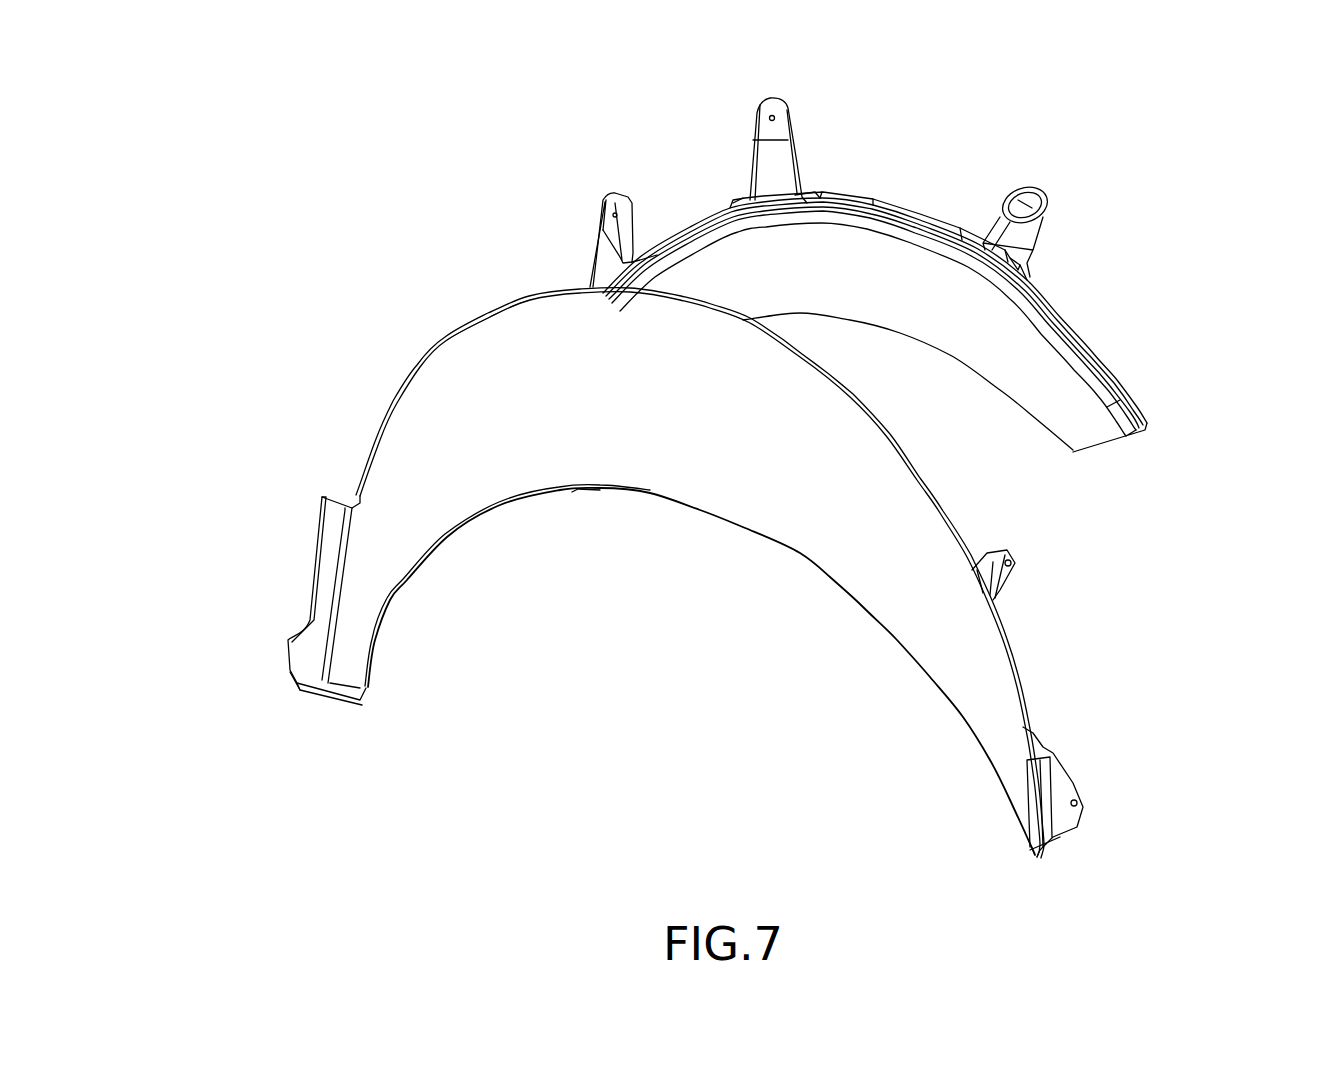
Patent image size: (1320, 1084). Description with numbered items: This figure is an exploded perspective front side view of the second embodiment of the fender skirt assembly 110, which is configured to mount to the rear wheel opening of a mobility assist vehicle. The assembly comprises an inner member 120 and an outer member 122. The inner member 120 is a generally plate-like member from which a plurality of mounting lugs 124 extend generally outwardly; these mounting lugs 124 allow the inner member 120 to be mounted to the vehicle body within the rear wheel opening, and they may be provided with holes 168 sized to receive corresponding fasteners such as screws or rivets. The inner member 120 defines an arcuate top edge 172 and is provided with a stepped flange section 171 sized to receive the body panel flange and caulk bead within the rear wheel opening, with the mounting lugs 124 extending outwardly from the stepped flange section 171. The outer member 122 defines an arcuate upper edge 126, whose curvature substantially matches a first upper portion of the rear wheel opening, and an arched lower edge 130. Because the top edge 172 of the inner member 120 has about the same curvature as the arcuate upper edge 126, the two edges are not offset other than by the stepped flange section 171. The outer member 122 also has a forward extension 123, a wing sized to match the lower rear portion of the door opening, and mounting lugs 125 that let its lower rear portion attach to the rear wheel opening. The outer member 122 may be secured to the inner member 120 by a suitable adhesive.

The fender skirt assembly 110 is at (232, 176).
The inner member 120 is at (1105, 358).
The outer member 122 is at (396, 409).
The forward extension 123 is at (303, 567).
The mounting lugs 124 is at (753, 122).
The mounting lugs 125 is at (1012, 562).
The arcuate upper edge 126 is at (488, 317).
The arched lower edge 130 is at (862, 606).
The holes 168 is at (1078, 805).
The stepped flange section 171 is at (1146, 430).
The arcuate top edge 172 is at (881, 214).